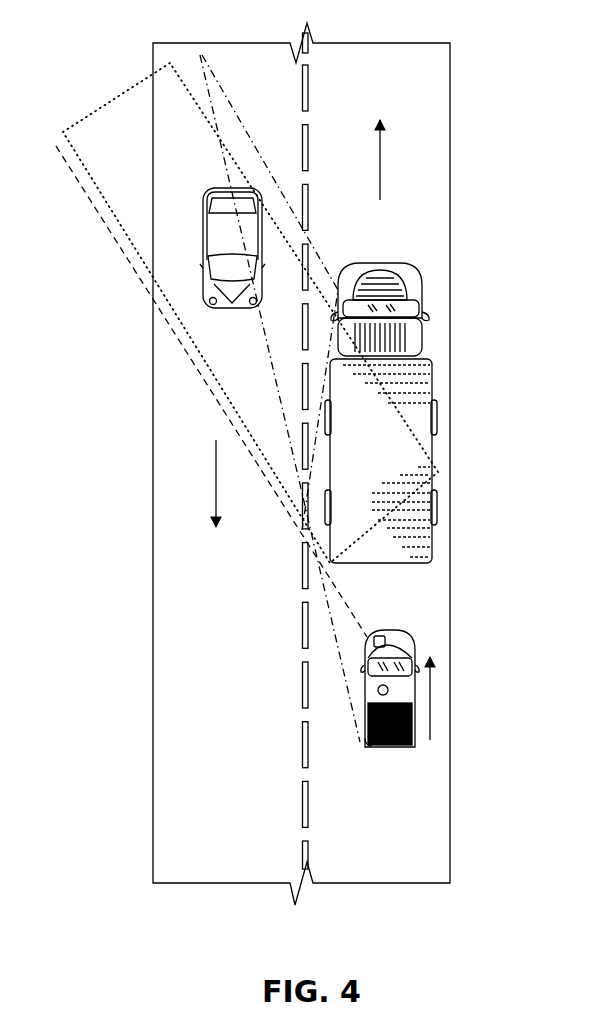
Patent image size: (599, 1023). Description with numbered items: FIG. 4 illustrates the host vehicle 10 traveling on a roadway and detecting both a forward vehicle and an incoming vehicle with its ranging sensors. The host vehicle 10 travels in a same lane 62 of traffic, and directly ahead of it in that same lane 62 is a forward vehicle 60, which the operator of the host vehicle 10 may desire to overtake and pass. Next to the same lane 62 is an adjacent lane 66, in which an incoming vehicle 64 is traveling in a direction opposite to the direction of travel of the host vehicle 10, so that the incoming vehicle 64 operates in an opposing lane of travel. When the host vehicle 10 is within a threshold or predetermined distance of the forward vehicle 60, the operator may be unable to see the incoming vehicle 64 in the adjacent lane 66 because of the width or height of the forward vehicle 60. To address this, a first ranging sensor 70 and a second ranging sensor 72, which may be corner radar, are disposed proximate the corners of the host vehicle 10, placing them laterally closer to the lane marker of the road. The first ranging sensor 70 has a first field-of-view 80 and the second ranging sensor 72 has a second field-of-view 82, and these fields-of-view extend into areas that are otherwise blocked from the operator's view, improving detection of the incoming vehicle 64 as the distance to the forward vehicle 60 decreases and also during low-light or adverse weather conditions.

The host vehicle 10 is at (425, 698).
The forward vehicle 60 is at (433, 313).
The same lane 62 is at (378, 855).
The incoming vehicle 64 is at (198, 208).
The adjacent lane 66 is at (211, 861).
The first ranging sensor 70 is at (381, 635).
The second ranging sensor 72 is at (367, 748).
The first field-of-view 80 is at (57, 140).
The second field-of-view 82 is at (223, 92).